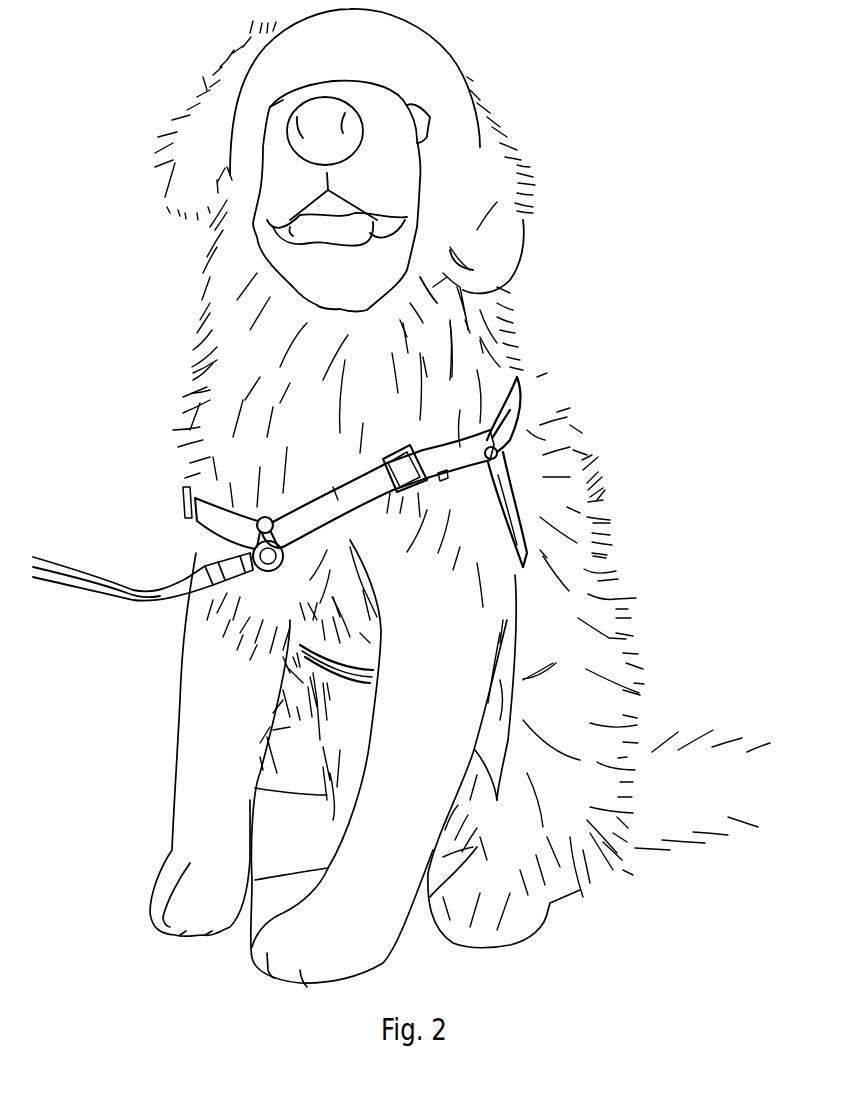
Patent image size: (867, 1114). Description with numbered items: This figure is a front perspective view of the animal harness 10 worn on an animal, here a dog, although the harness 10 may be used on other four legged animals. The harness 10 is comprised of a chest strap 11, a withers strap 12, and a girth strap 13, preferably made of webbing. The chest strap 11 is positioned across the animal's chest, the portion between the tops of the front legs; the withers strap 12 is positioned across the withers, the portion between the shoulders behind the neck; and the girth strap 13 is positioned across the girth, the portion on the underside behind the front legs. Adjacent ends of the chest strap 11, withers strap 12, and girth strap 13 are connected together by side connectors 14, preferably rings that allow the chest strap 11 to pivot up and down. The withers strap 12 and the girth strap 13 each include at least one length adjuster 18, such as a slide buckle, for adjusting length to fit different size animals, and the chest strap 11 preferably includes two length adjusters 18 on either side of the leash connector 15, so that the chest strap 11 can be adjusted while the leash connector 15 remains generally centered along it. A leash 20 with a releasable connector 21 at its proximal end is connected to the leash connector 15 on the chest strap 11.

The animal harness 10 is at (540, 368).
The chest strap 11 is at (358, 507).
The withers strap 12 is at (508, 423).
The girth strap 13 is at (513, 493).
The side connector 14 is at (492, 476).
The leash connector 15 is at (277, 572).
The length adjuster 18 is at (186, 521).
The leash 20 is at (77, 573).
The releasable connector 21 is at (238, 573).